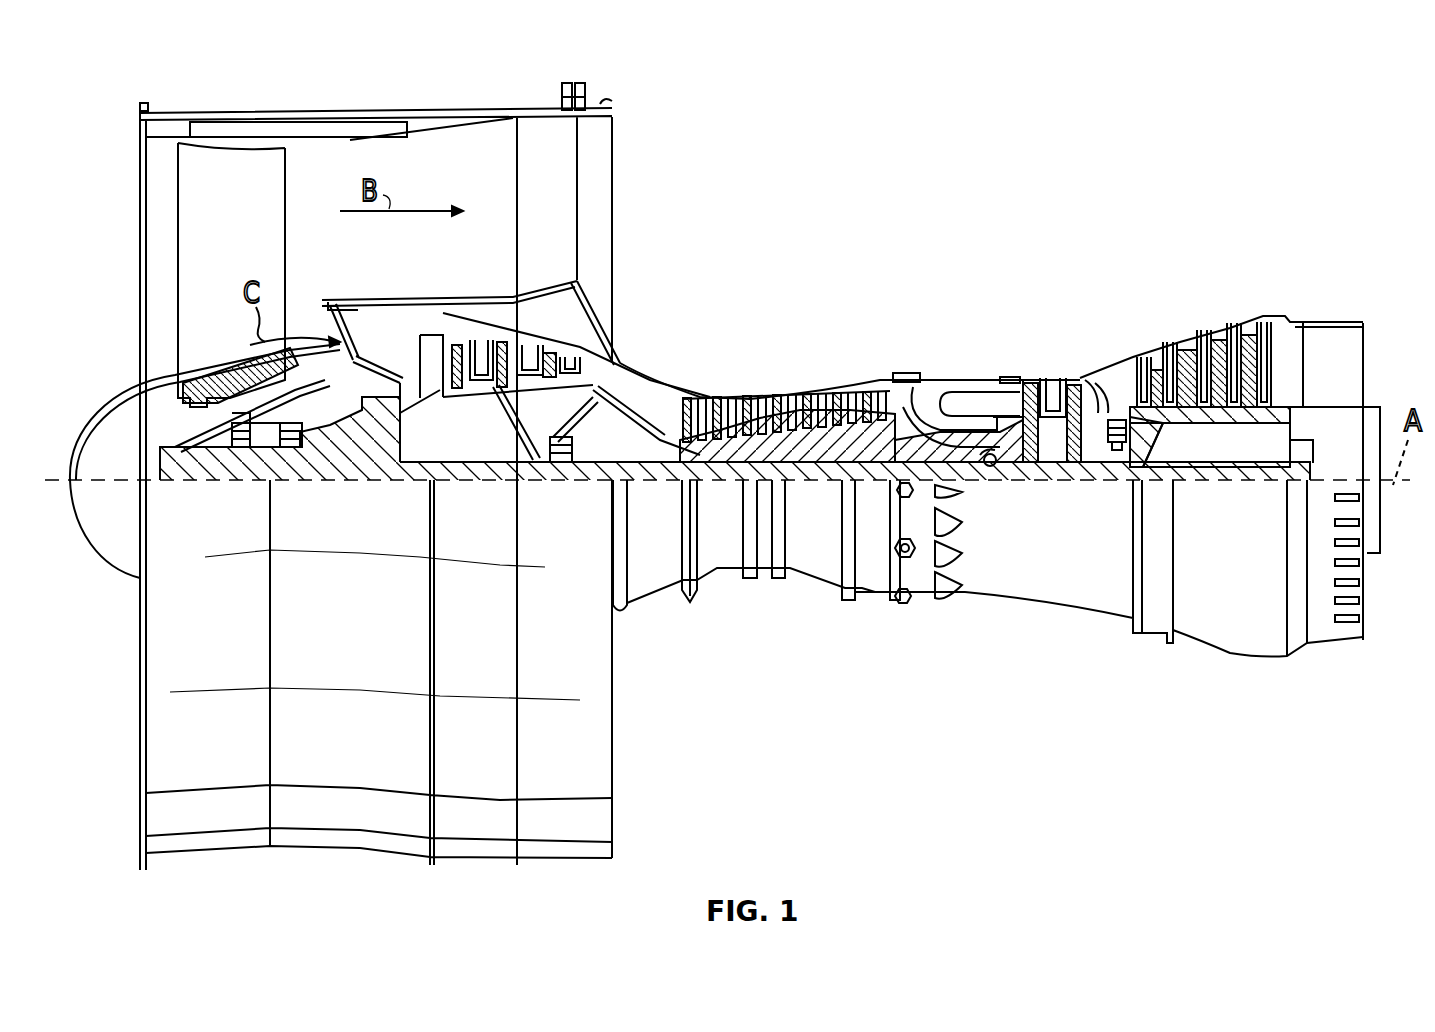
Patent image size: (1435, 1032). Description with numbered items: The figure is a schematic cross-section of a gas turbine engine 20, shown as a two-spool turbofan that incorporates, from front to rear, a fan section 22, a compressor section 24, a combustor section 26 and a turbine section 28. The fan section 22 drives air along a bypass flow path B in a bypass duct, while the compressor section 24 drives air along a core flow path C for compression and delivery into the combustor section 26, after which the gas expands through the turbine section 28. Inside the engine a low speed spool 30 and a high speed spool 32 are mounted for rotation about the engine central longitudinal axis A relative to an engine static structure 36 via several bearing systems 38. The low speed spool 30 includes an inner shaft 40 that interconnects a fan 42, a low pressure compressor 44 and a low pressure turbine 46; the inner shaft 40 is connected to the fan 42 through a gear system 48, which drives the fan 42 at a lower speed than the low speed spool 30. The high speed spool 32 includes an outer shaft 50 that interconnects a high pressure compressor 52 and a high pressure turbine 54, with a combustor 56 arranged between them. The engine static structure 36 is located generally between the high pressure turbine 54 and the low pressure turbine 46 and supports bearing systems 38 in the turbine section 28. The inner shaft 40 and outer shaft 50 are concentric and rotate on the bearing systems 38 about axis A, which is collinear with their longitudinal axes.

The gas turbine engine 20 is at (1190, 148).
The fan section 22 is at (246, 98).
The compressor section 24 is at (806, 332).
The combustor section 26 is at (966, 328).
The turbine section 28 is at (1121, 317).
The low speed spool 30 is at (833, 489).
The high speed spool 32 is at (897, 405).
The engine static structure 36 is at (873, 607).
The bearing systems 38 is at (240, 450).
The inner shaft 40 is at (628, 484).
The fan 42 is at (258, 244).
The low pressure compressor 44 is at (528, 358).
The low pressure turbine 46 is at (1222, 330).
The gear system 48 is at (380, 455).
The outer shaft 50 is at (1001, 470).
The high pressure compressor 52 is at (793, 448).
The high pressure turbine 54 is at (1055, 380).
The combustor 56 is at (977, 396).